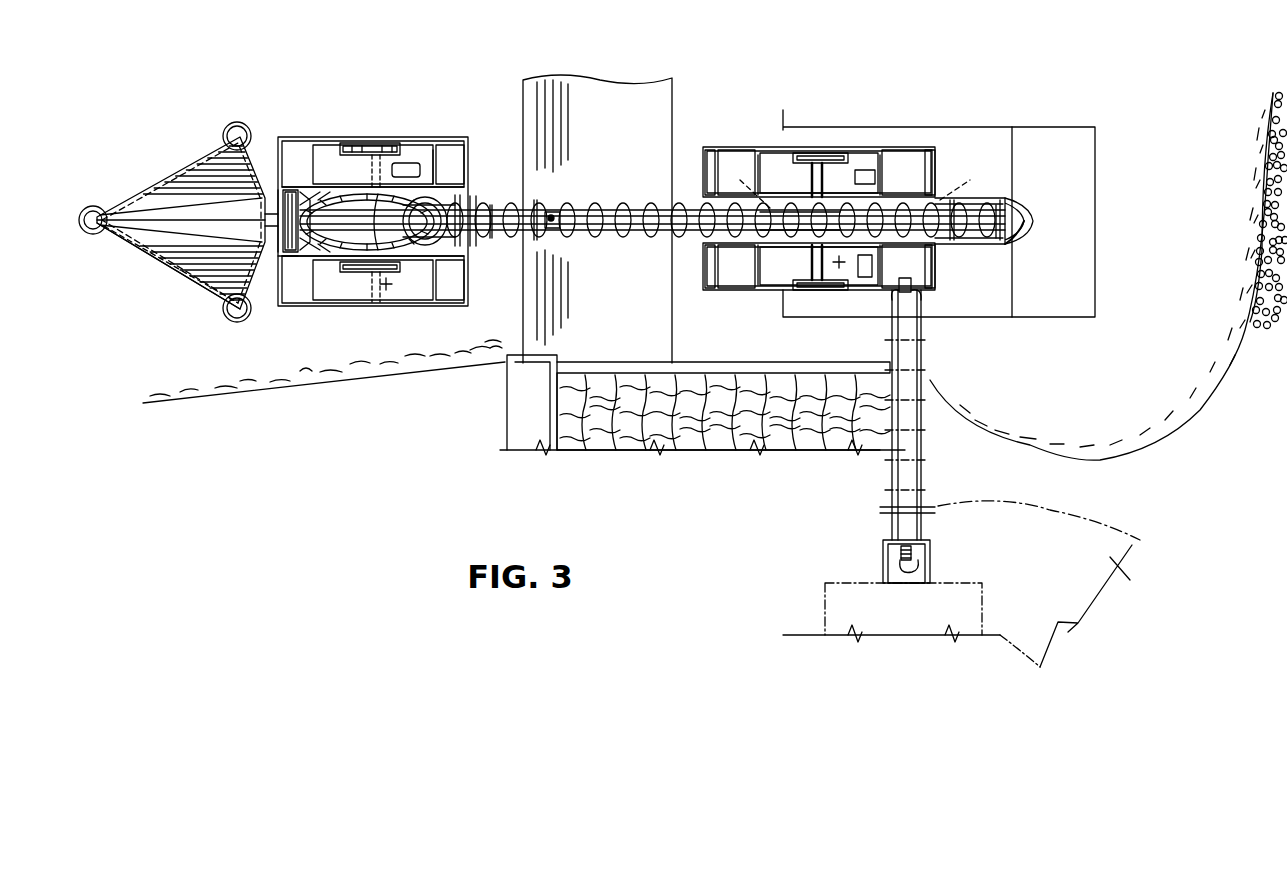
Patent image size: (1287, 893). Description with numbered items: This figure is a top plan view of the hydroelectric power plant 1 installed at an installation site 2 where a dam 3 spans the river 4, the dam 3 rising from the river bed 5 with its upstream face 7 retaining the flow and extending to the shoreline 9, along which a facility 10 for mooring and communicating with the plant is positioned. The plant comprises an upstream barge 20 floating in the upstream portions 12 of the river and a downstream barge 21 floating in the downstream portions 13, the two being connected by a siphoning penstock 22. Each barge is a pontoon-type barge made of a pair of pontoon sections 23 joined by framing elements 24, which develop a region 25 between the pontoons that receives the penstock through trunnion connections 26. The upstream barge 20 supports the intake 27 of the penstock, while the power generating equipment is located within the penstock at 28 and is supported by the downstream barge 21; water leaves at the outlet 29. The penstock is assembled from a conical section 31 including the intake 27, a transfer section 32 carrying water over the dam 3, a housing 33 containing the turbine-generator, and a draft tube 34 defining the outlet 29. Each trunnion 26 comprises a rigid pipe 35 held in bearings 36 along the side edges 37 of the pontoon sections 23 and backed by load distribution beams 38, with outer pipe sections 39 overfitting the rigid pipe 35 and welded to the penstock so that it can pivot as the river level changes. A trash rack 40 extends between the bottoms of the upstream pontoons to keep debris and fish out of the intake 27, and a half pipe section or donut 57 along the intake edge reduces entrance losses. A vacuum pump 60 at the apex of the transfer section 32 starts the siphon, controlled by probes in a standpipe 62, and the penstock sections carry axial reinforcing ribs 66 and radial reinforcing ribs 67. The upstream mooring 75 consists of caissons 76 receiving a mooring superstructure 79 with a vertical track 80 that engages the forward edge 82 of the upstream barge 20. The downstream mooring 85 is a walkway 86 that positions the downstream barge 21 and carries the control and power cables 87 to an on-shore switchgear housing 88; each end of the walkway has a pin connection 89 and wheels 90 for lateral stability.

The hydroelectric power plant 1 is at (426, 130).
The installation site 2 is at (840, 67).
The dam 3 is at (626, 90).
The river 4 is at (387, 61).
The river bed 5 is at (300, 374).
The upstream face 7 is at (520, 314).
The shoreline 9 is at (437, 365).
The facility 10 is at (726, 442).
The upstream portions 12 is at (107, 157).
The downstream portions 13 is at (1153, 120).
The upstream barge 20 is at (319, 83).
The downstream barge 21 is at (882, 98).
The siphoning penstock 22 is at (603, 242).
The pontoon sections 23 is at (297, 142).
The framing elements 24 is at (468, 190).
The regions 25 is at (477, 246).
The trunnion connections 26 is at (378, 124).
The intake 27 is at (333, 264).
The power generating equipment location 28 is at (774, 262).
The outlet 29 is at (1021, 200).
The conical section 31 is at (445, 246).
The transfer section 32 is at (638, 200).
The housing 33 is at (780, 187).
The draft tube 34 is at (1007, 248).
The rigid pipe 35 is at (388, 287).
The bearings 36 is at (362, 144).
The side edges 37 is at (458, 190).
The load distribution beams 38 is at (446, 156).
The outer pipe sections 39 is at (384, 153).
The trash rack 40 is at (276, 205).
The half pipe section or donut 57 is at (302, 238).
The vacuum pump 60 is at (553, 215).
The standpipe 62 is at (553, 225).
The axial reinforcing ribs 66 is at (536, 212).
The radial reinforcing ribs 67 is at (492, 203).
The upstream mooring 75 is at (127, 251).
The caissons 76 is at (222, 128).
The mooring superstructure 79 is at (186, 245).
The vertical track 80 is at (270, 214).
The forward edge 82 is at (276, 300).
The downstream mooring 85 is at (930, 382).
The walkway 86 is at (920, 466).
The control and power cables 87 is at (890, 530).
The switchgear housing 88 is at (893, 618).
The pin connection 89 is at (899, 296).
The wheels 90 is at (893, 300).